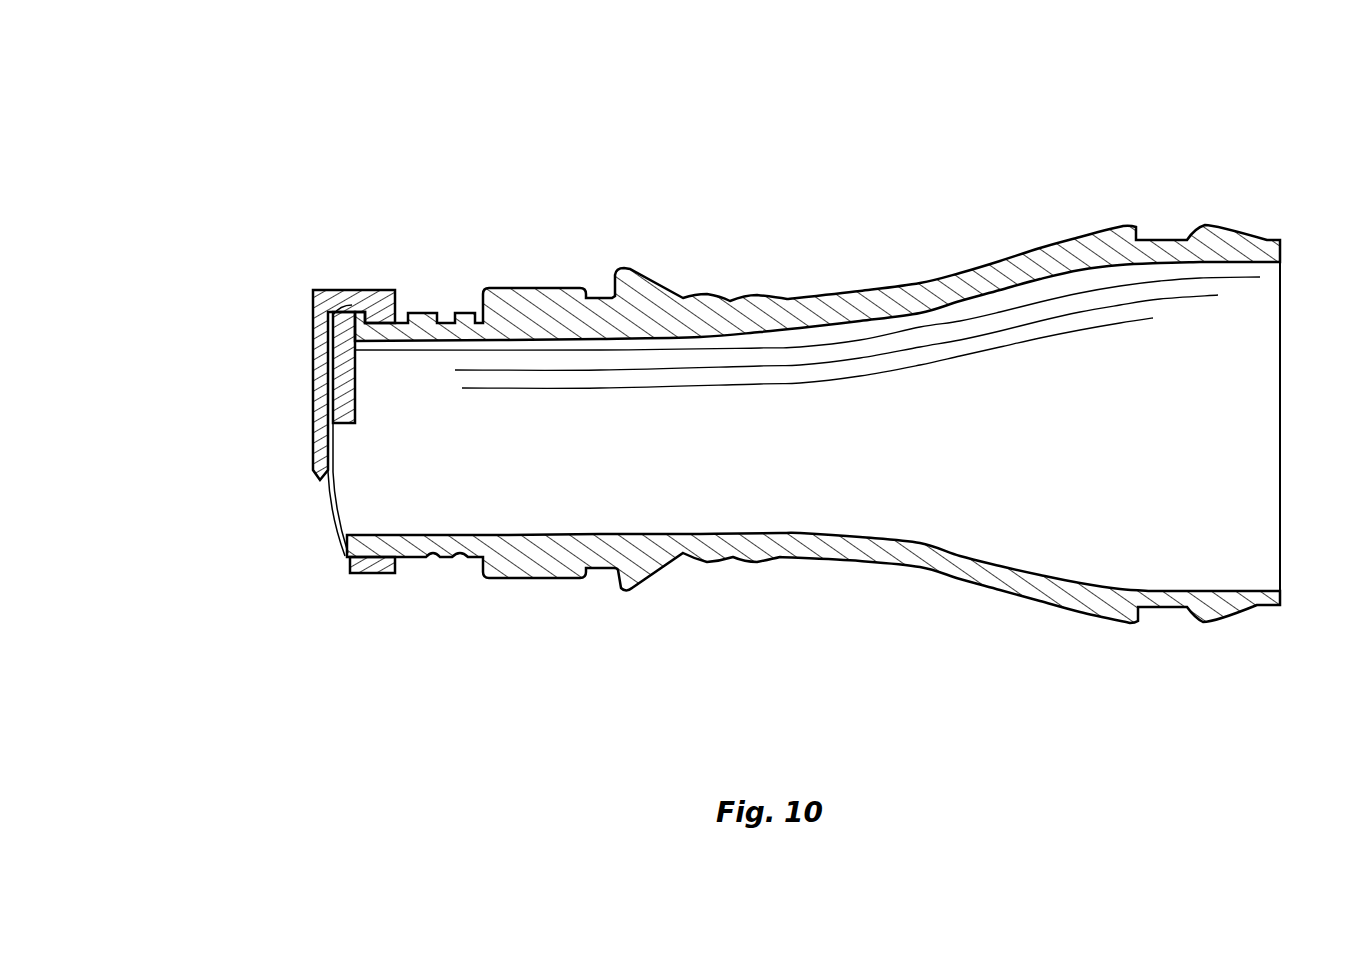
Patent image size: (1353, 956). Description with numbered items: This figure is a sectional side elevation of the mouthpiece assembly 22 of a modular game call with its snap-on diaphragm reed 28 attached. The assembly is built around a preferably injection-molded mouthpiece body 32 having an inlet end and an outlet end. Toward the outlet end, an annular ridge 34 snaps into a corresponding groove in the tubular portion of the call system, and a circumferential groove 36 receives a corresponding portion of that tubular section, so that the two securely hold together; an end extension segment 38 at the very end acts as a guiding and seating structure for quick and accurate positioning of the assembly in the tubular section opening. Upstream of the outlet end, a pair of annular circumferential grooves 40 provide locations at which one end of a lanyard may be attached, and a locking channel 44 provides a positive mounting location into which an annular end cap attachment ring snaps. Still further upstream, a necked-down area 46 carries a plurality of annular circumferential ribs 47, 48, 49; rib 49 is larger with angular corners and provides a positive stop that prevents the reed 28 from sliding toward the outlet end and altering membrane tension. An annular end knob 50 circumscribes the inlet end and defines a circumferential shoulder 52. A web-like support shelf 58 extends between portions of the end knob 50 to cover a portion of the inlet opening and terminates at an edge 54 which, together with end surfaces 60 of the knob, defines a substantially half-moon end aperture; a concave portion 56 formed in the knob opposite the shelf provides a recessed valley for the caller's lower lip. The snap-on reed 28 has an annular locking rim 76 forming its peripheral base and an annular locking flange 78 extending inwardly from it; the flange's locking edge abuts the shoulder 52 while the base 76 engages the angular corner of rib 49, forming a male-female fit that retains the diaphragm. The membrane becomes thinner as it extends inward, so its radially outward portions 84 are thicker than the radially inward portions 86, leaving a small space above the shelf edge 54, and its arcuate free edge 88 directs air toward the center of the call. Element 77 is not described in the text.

The mouthpiece assembly 22 is at (1065, 148).
The snap-on diaphragm reed 28 is at (308, 297).
The mouthpiece body 32 is at (948, 272).
The annular ridge 34 is at (1205, 228).
The circumferential groove 36 is at (1168, 240).
The end extension segment 38 is at (1270, 240).
The annular circumferential grooves 40 is at (690, 300).
The locking channel 44 is at (603, 292).
The necked-down area 46 is at (447, 560).
The rib 47 is at (465, 318).
The rib 48 is at (425, 318).
The rib 49 is at (405, 318).
The annular end knob 50 is at (342, 300).
The circumferential shoulder 52 is at (375, 300).
The edge 54 is at (340, 425).
The concave portion 56 is at (335, 520).
The support shelf 58 is at (345, 385).
The end surfaces 60 is at (337, 490).
The annular locking rim 76 is at (330, 302).
The direction arrow 77 is at (350, 575).
The annular locking flange 78 is at (383, 318).
The radially outward membrane portions 84 is at (316, 352).
The radially inward membrane portions 86 is at (316, 430).
The free edge 88 is at (322, 478).